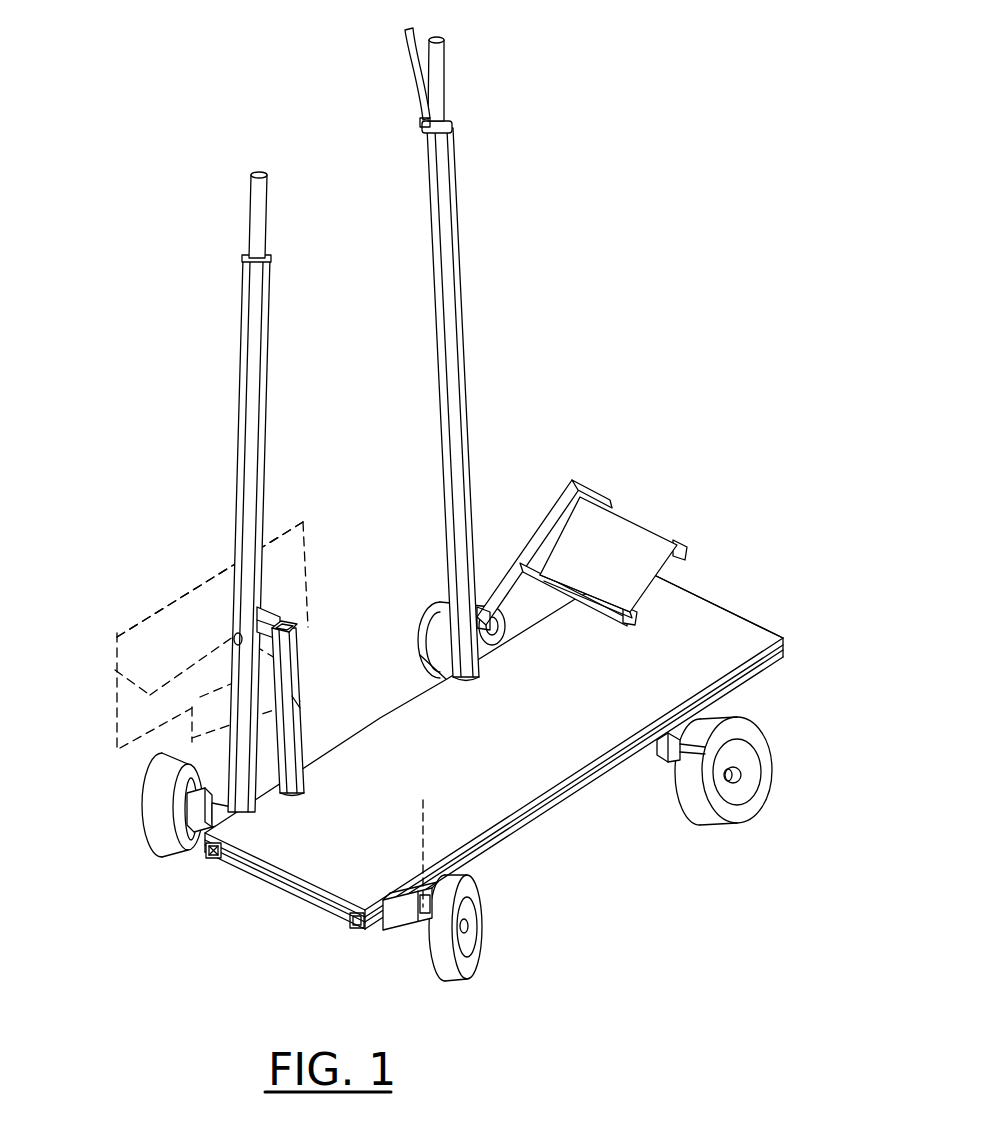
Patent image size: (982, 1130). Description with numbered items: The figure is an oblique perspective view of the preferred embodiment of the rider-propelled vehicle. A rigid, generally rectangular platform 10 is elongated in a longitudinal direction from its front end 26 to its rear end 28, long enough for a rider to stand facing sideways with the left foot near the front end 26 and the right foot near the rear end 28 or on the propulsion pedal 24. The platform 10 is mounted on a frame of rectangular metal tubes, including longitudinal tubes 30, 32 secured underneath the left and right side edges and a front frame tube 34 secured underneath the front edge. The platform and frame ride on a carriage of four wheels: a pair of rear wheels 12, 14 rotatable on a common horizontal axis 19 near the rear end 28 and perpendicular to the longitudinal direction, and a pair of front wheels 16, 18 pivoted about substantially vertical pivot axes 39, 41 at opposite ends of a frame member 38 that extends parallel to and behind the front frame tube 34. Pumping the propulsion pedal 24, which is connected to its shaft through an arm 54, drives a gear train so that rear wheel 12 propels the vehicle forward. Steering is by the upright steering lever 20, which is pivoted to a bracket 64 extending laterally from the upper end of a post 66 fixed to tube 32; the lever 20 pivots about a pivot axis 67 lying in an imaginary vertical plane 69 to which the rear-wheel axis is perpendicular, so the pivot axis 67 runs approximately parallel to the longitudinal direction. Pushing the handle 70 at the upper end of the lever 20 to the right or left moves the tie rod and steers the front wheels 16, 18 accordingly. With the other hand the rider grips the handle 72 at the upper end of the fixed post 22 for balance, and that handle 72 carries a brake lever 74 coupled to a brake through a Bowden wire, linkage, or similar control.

The platform 10 is at (732, 632).
The rear wheel 12 is at (432, 610).
The rear wheel 14 is at (727, 817).
The front wheel 16 is at (168, 770).
The front wheel 18 is at (447, 967).
The common horizontal axis 19 is at (745, 790).
The steering lever 20 is at (239, 456).
The post 22 is at (453, 265).
The propulsion pedal 24 is at (633, 540).
The front end 26 is at (248, 853).
The rear end 28 is at (702, 593).
The longitudinal tube 30 is at (503, 830).
The longitudinal tube 32 is at (217, 853).
The front frame tube 34 is at (280, 887).
The frame member 38 is at (402, 912).
The pivot axis 39 is at (292, 702).
The pivot axis 41 is at (418, 845).
The arm 54 is at (560, 513).
The bracket 64 is at (262, 603).
The post 66 is at (293, 663).
The pivot axis 67 is at (112, 673).
The imaginary vertical plane 69 is at (193, 590).
The handle 70 is at (262, 190).
The handle 72 is at (440, 112).
The brake lever 74 is at (407, 37).